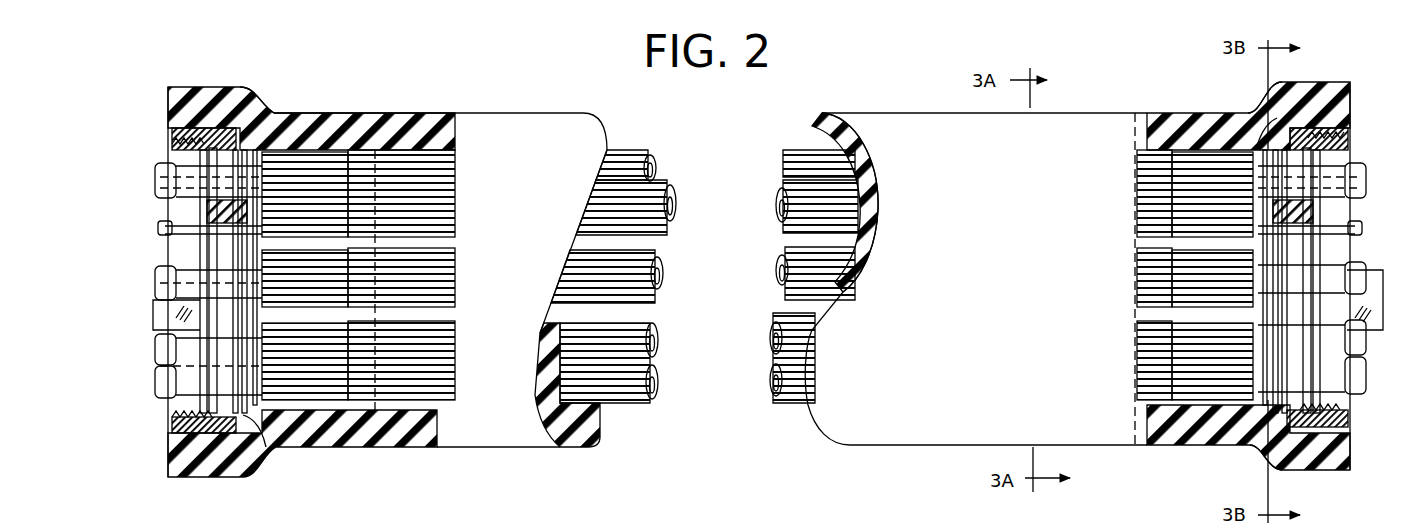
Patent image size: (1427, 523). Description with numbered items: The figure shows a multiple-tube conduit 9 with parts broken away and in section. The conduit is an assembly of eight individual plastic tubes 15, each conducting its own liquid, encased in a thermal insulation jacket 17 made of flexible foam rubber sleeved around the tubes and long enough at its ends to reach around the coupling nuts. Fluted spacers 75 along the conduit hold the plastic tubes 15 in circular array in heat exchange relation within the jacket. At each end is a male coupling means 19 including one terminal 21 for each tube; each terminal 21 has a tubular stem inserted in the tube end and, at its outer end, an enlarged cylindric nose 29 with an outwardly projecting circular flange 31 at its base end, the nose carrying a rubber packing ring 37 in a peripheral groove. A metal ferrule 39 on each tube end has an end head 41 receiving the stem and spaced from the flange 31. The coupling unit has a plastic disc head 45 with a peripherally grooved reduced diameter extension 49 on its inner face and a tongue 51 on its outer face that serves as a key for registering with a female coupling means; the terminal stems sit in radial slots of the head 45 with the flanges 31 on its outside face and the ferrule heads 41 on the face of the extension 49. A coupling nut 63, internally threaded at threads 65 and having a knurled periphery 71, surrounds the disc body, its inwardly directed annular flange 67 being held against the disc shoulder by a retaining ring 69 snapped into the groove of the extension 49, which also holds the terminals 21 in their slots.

The multiple-tube conduit 9 is at (866, 450).
The plastic tube 15 is at (642, 125).
The thermal insulation jacket 17 is at (576, 112).
The male coupling means 19 is at (167, 141).
The terminal 21 is at (156, 196).
The cylindric nose 29 is at (160, 178).
The circular flange 31 is at (170, 163).
The packing ring 37 is at (165, 211).
The metal ferrule 39 is at (322, 150).
The end head 41 is at (272, 447).
The circular head 45 is at (205, 236).
The reduced diameter extension 49 is at (318, 160).
The tongue 51 is at (152, 318).
The coupling nut 63 is at (178, 440).
The internal threads 65 is at (175, 412).
The annular flange 67 is at (250, 440).
The retaining ring 69 is at (258, 112).
The periphery of the nut 71 is at (1316, 118).
The fluted spacer 75 is at (375, 160).